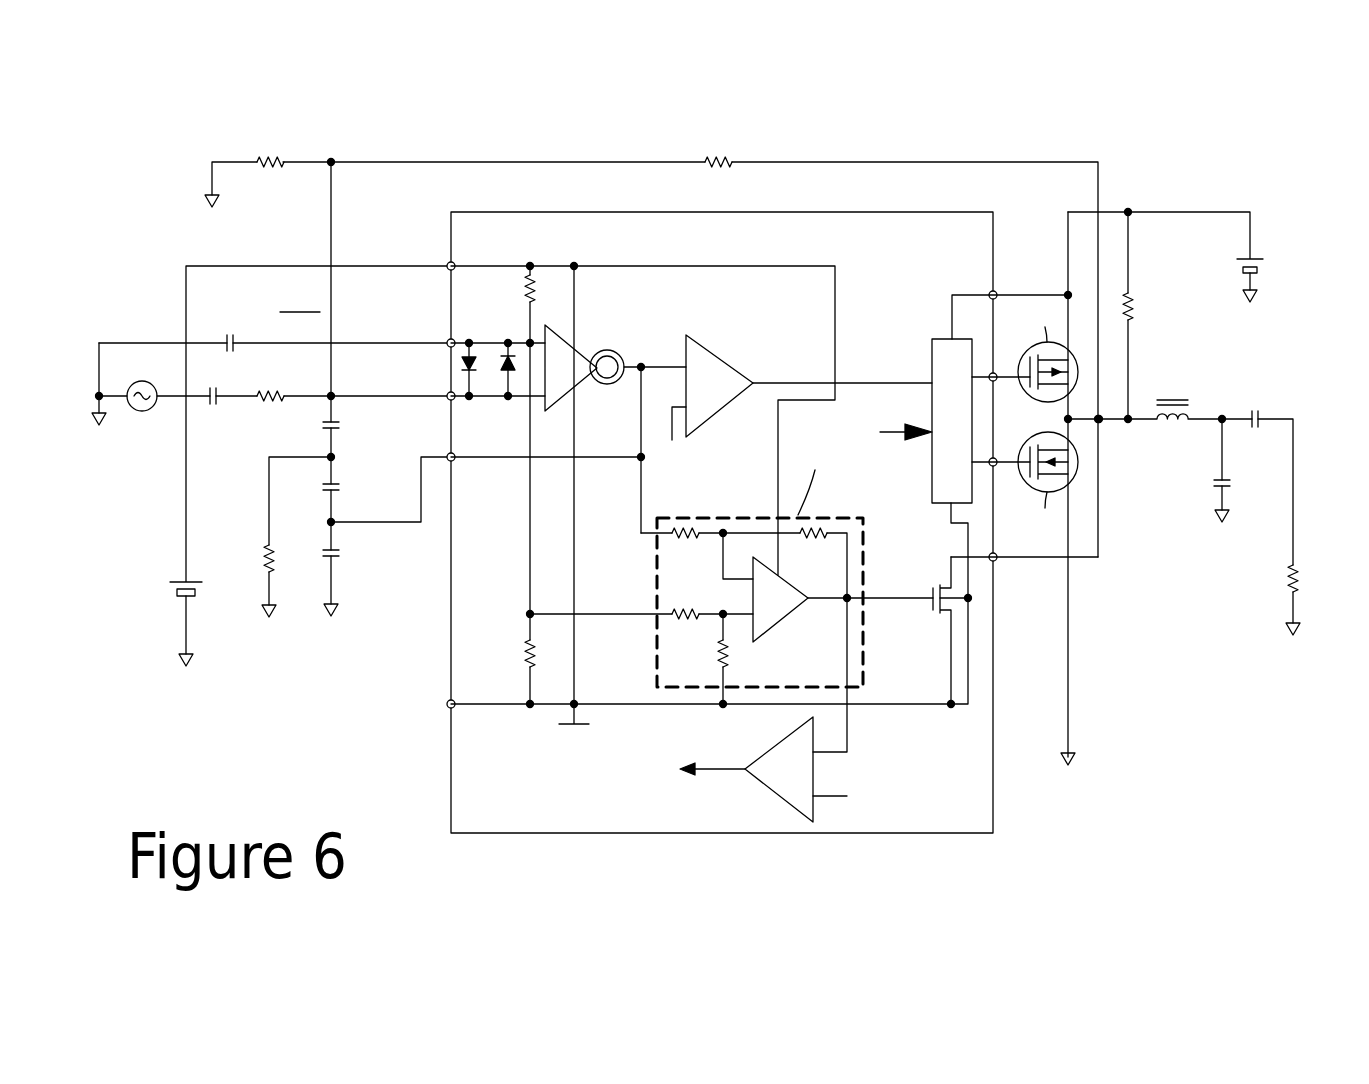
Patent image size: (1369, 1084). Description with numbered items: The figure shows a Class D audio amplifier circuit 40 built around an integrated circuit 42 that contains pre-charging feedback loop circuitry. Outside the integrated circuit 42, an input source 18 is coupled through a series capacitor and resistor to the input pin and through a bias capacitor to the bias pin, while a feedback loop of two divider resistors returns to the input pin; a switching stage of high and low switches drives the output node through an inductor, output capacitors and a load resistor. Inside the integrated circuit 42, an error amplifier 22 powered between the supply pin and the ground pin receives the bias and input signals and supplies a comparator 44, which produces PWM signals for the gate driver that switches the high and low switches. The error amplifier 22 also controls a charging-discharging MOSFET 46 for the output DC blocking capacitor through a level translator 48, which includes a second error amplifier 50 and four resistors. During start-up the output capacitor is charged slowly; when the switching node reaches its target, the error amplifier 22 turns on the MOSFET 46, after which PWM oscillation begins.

The input signal source 18 is at (142, 411).
The error amplifier 22 is at (592, 357).
The Class D audio amplifier circuit 40 is at (696, 482).
The integrated circuit 42 is at (836, 213).
The comparator 44 is at (683, 348).
The charging-discharging means 46 is at (932, 612).
The level translator 48 is at (725, 605).
The error amplifier 50 is at (790, 618).